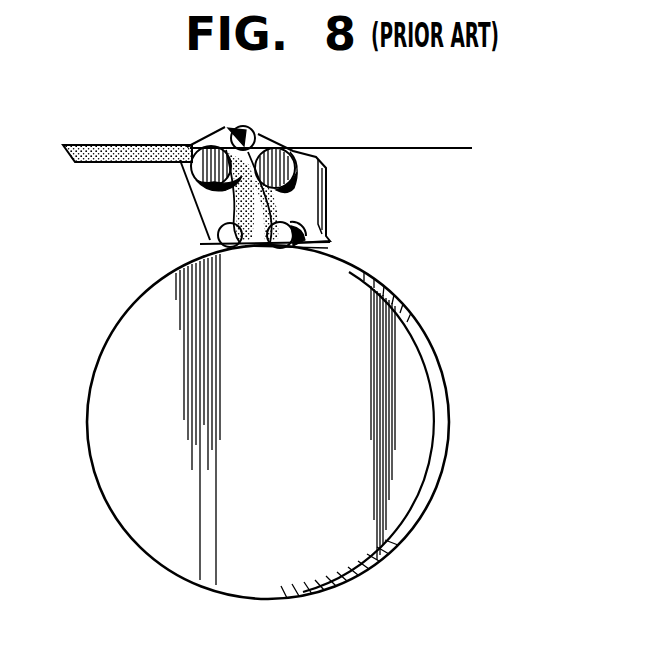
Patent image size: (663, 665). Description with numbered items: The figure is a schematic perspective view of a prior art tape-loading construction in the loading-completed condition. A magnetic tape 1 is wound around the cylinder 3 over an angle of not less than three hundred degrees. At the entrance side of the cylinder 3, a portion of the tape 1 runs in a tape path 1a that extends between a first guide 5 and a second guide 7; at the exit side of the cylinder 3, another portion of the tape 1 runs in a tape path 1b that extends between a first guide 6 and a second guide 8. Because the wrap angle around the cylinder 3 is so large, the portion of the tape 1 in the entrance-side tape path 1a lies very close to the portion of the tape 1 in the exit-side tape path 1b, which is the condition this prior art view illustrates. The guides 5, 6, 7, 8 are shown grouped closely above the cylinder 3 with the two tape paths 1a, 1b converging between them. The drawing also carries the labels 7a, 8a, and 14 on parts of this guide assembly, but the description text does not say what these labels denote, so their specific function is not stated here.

The magnetic tape 1 is at (105, 145).
The tape path 1a is at (242, 206).
The tape path 1b is at (286, 204).
The cylinder 3 is at (425, 410).
The first guide 5 is at (216, 244).
The first guide 6 is at (293, 234).
The second guide 7 is at (215, 143).
The roller shaft 7a is at (222, 240).
The second guide 8 is at (282, 144).
The roller shaft 8a is at (313, 213).
The spring 14 is at (238, 128).